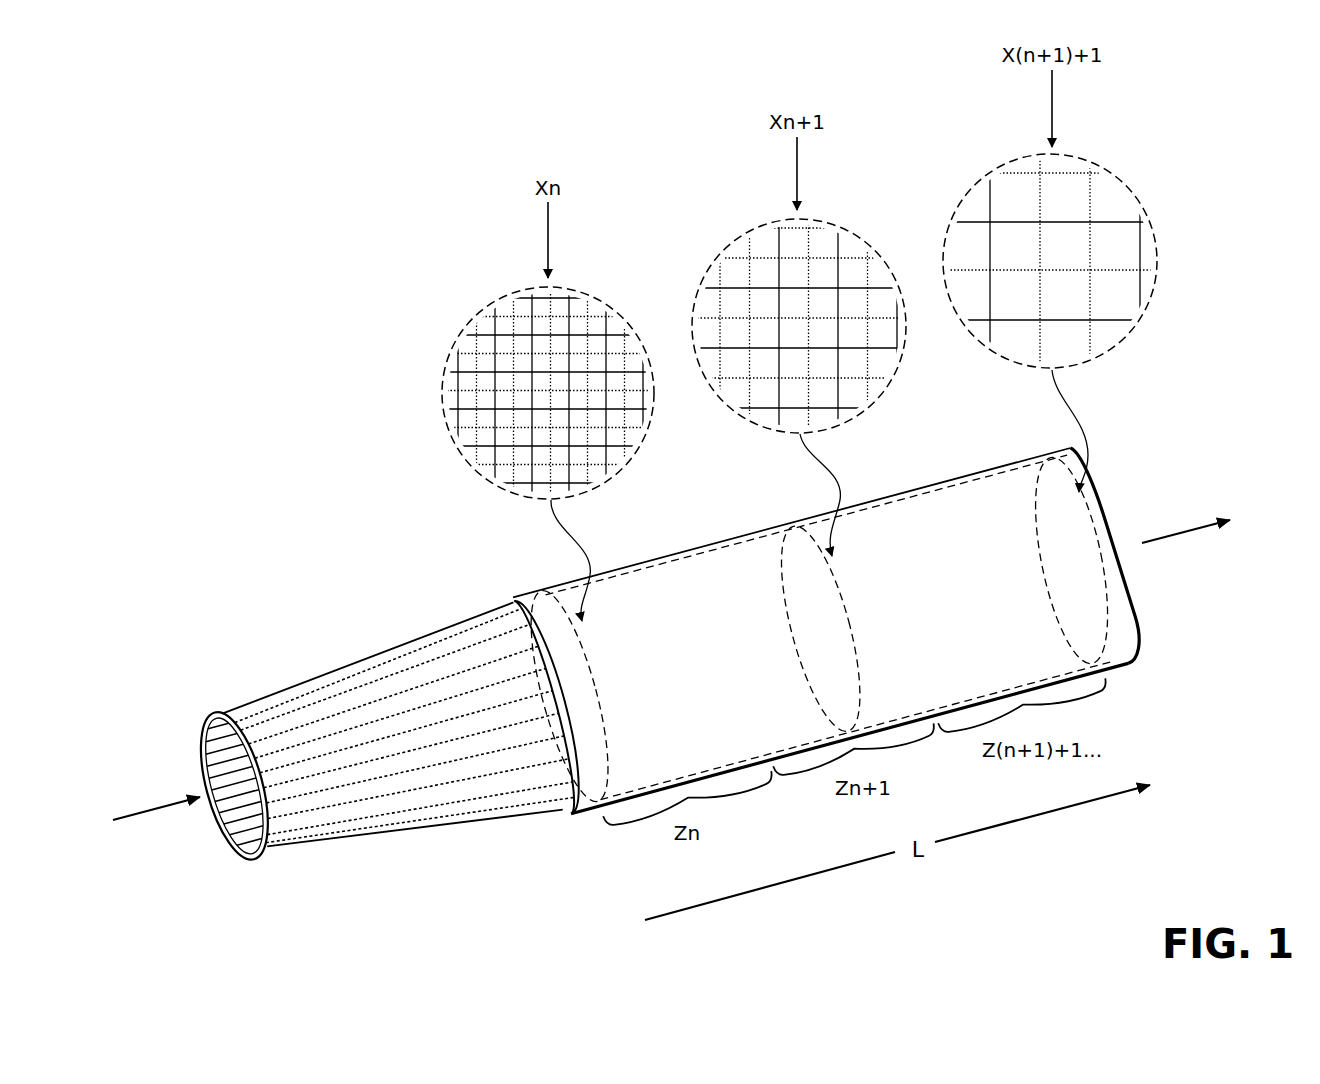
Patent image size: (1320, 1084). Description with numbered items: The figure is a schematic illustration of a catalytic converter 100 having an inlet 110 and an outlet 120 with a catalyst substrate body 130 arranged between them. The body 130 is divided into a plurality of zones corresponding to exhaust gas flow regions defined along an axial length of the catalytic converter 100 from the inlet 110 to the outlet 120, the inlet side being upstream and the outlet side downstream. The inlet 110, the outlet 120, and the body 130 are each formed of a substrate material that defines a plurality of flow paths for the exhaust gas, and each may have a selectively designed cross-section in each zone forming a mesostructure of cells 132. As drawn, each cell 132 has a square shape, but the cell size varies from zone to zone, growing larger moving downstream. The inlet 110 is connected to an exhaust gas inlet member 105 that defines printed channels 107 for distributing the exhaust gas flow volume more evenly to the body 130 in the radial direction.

The catalytic converter 100 is at (430, 540).
The exhaust gas inlet member 105 is at (285, 672).
The printed channels 107 is at (460, 645).
The inlet 110 is at (555, 823).
The outlet 120 is at (1173, 537).
The catalyst substrate body 130 is at (748, 530).
The cells 132 is at (466, 325).